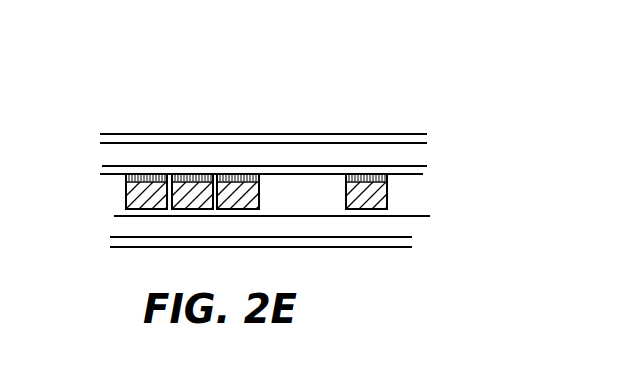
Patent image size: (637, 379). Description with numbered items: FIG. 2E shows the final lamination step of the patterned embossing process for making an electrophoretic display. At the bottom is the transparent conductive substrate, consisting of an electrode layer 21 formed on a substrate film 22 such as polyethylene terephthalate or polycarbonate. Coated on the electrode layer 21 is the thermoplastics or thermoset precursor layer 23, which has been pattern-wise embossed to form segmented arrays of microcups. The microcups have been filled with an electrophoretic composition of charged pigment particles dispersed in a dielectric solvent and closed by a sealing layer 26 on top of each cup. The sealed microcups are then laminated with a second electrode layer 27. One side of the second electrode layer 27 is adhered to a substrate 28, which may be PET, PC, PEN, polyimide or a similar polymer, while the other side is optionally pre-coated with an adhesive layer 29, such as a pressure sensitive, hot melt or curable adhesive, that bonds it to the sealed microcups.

The electrode layer 21 is at (127, 226).
The substrate film 22 is at (118, 243).
The thermoplastics or thermoset precursor layer 23 is at (413, 200).
The sealing layer 26 is at (386, 177).
The second electrode layer 27 is at (110, 154).
The substrate 28 is at (100, 134).
The adhesive layer 29 is at (102, 174).